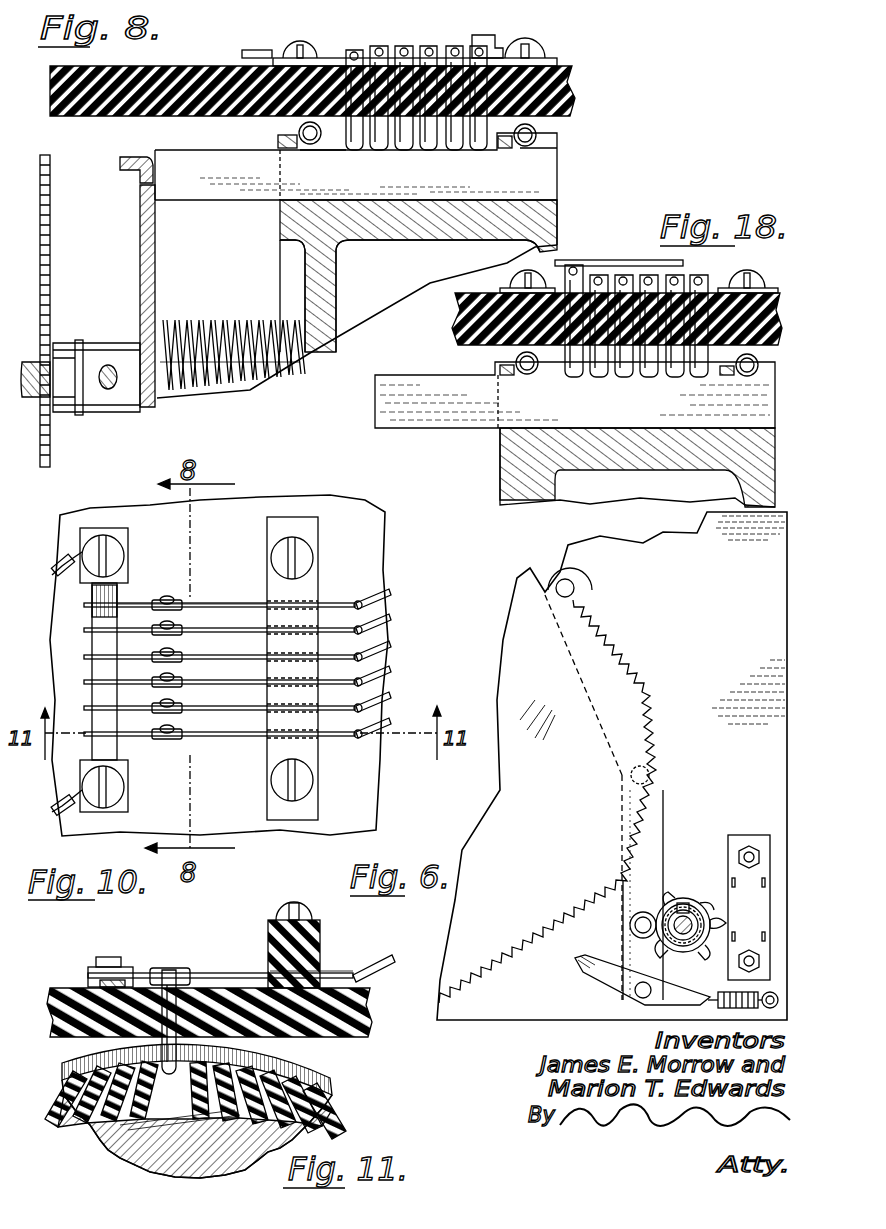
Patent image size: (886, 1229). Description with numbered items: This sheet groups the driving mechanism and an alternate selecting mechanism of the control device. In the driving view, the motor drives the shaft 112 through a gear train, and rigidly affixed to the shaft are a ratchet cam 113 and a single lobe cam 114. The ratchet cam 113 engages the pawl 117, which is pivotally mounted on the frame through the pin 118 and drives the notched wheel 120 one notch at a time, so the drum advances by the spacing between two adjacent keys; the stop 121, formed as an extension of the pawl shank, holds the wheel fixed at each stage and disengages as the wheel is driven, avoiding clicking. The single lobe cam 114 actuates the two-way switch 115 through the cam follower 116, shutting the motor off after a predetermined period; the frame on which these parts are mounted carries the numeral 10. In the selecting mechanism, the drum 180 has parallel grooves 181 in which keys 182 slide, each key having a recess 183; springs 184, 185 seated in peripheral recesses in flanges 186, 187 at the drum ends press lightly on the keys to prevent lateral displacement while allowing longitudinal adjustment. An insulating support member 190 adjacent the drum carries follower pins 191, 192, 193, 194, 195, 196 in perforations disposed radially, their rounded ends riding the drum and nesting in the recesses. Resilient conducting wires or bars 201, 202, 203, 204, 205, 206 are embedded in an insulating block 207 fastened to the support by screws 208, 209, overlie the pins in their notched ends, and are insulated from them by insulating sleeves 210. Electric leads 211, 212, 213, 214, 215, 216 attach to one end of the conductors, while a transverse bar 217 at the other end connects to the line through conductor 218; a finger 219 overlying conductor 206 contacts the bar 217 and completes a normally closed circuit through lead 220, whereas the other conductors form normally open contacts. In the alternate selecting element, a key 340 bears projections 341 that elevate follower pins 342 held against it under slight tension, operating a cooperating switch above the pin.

In FIG. 8, the support member 190 is at (578, 68).
In FIG. 11, the support member 190 is at (335, 1037).
In FIG. 8, the screw 208 is at (300, 45).
In FIG. 10, the screw 208 is at (305, 790).
In FIG. 8, the screw 209 is at (540, 48).
In FIG. 10, the screw 209 is at (305, 565).
In FIG. 11, the screw 209 is at (285, 905).
In FIG. 8, the transverse bar 217 is at (250, 50).
In FIG. 10, the transverse bar 217 is at (92, 645).
In FIG. 11, the transverse bar 217 is at (88, 980).
In FIG. 8, the finger 219 is at (490, 40).
In FIG. 10, the finger 219 is at (112, 595).
In FIG. 11, the finger 219 is at (98, 957).
In FIG. 8, the electric conducting wire or bar 201 is at (352, 46).
In FIG. 10, the electric conducting wire or bar 201 is at (238, 729).
In FIG. 11, the electric conducting wire or bar 201 is at (218, 972).
In FIG. 8, the electric conducting wire or bar 202 is at (378, 46).
In FIG. 10, the electric conducting wire or bar 202 is at (238, 703).
In FIG. 8, the electric conducting wire or bar 203 is at (403, 46).
In FIG. 10, the electric conducting wire or bar 203 is at (238, 677).
In FIG. 8, the electric conducting wire or bar 204 is at (429, 46).
In FIG. 10, the electric conducting wire or bar 204 is at (238, 652).
In FIG. 8, the electric conducting wire or bar 205 is at (455, 46).
In FIG. 10, the electric conducting wire or bar 205 is at (238, 625).
In FIG. 8, the electric conducting wire or bar 206 is at (478, 46).
In FIG. 10, the electric conducting wire or bar 206 is at (238, 600).
In FIG. 11, the electric conducting wire or bar 206 is at (130, 970).
In FIG. 8, the key 182 is at (180, 150).
In FIG. 11, the key 182 is at (315, 1110).
In FIG. 8, the spring 184 is at (296, 127).
In FIG. 8, the flange 186 is at (276, 142).
In FIG. 8, the spring 185 is at (538, 130).
In FIG. 11, the spring 185 is at (330, 1078).
In FIG. 8, the flange 187 is at (560, 147).
In FIG. 11, the flange 187 is at (332, 1093).
In FIG. 8, the recess 183 is at (345, 150).
In FIG. 8, the follower pin 191 is at (355, 150).
In FIG. 10, the follower pin 191 is at (150, 740).
In FIG. 11, the follower pin 191 is at (90, 1047).
In FIG. 8, the follower pin 192 is at (380, 150).
In FIG. 10, the follower pin 192 is at (150, 714).
In FIG. 8, the follower pin 193 is at (405, 150).
In FIG. 10, the follower pin 193 is at (150, 688).
In FIG. 8, the follower pin 194 is at (430, 150).
In FIG. 10, the follower pin 194 is at (150, 662).
In FIG. 8, the follower pin 195 is at (455, 150).
In FIG. 10, the follower pin 195 is at (150, 636).
In FIG. 8, the follower pin 196 is at (482, 150).
In FIG. 10, the follower pin 196 is at (150, 610).
In FIG. 8, the groove 181 is at (557, 200).
In FIG. 11, the groove 181 is at (135, 1125).
In FIG. 8, the drum 180 is at (557, 220).
In FIG. 11, the drum 180 is at (95, 1140).
In FIG. 18, the projection 341 is at (545, 352).
In FIG. 18, the key 340 is at (450, 380).
In FIG. 18, the follower pin 342 is at (640, 385).
In FIG. 10, the lead 220 is at (70, 580).
In FIG. 10, the conductor 218 is at (60, 808).
In FIG. 10, the block 207 is at (305, 747).
In FIG. 11, the block 207 is at (268, 925).
In FIG. 10, the insulating sleeve 210 is at (182, 738).
In FIG. 11, the insulating sleeve 210 is at (160, 968).
In FIG. 10, the electric lead 211 is at (380, 721).
In FIG. 10, the electric lead 212 is at (380, 695).
In FIG. 10, the electric lead 213 is at (380, 669).
In FIG. 10, the electric lead 214 is at (380, 644).
In FIG. 10, the electric lead 215 is at (380, 617).
In FIG. 10, the electric lead 216 is at (380, 592).
In FIG. 6, the frame 10 is at (470, 1022).
In FIG. 6, the notched wheel 120 is at (520, 995).
In FIG. 6, the stop 121 is at (575, 583).
In FIG. 6, the pin 118 is at (630, 778).
In FIG. 6, the ratchet cam 113 is at (683, 898).
In FIG. 6, the single lobe cam 114 is at (720, 915).
In FIG. 6, the shaft 112 is at (630, 930).
In FIG. 6, the two-way switch 115 is at (742, 835).
In FIG. 6, the pawl 117 is at (605, 985).
In FIG. 6, the cam follower 116 is at (715, 945).